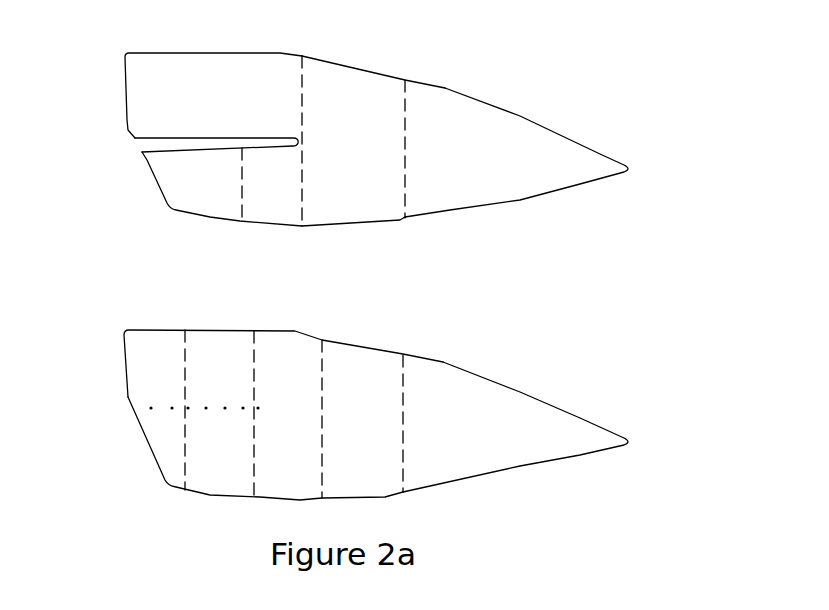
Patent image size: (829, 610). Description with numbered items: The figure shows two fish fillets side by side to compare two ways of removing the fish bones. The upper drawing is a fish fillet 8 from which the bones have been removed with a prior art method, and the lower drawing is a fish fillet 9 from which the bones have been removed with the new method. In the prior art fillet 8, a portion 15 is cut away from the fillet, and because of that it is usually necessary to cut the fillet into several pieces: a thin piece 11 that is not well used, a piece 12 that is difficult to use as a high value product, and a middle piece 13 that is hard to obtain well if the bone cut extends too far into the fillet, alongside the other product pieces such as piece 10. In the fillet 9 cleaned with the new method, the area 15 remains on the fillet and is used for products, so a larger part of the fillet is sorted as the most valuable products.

The fish fillet 8 is at (386, 146).
The fish fillet 9 is at (435, 402).
The piece 10 is at (164, 80).
The thin piece 11 is at (173, 177).
The piece 12 is at (279, 207).
The middle piece 13 is at (360, 121).
The portion 15 is at (145, 144).